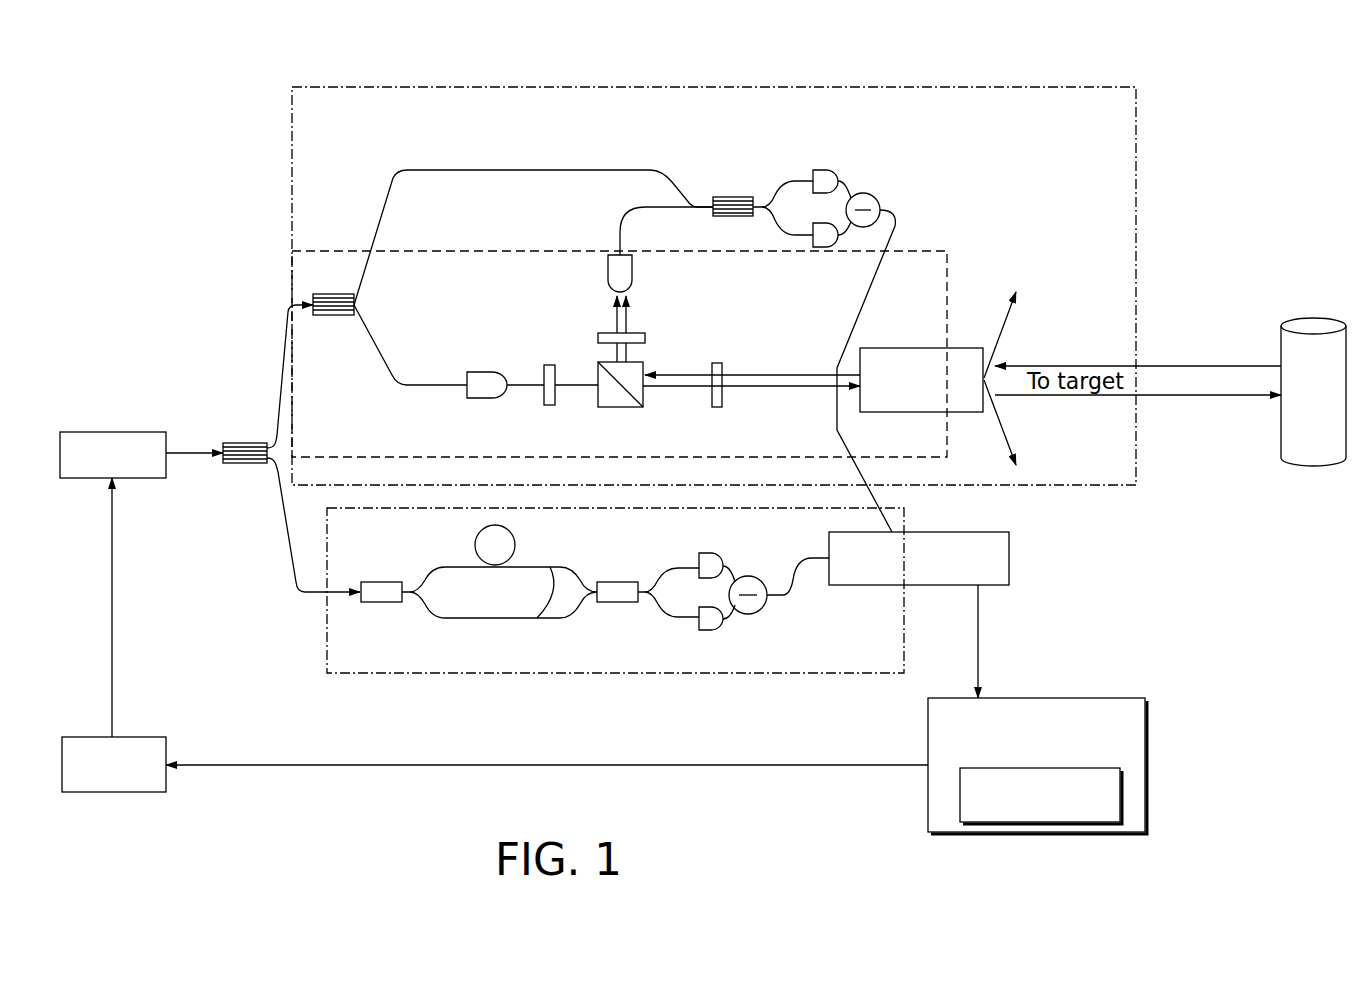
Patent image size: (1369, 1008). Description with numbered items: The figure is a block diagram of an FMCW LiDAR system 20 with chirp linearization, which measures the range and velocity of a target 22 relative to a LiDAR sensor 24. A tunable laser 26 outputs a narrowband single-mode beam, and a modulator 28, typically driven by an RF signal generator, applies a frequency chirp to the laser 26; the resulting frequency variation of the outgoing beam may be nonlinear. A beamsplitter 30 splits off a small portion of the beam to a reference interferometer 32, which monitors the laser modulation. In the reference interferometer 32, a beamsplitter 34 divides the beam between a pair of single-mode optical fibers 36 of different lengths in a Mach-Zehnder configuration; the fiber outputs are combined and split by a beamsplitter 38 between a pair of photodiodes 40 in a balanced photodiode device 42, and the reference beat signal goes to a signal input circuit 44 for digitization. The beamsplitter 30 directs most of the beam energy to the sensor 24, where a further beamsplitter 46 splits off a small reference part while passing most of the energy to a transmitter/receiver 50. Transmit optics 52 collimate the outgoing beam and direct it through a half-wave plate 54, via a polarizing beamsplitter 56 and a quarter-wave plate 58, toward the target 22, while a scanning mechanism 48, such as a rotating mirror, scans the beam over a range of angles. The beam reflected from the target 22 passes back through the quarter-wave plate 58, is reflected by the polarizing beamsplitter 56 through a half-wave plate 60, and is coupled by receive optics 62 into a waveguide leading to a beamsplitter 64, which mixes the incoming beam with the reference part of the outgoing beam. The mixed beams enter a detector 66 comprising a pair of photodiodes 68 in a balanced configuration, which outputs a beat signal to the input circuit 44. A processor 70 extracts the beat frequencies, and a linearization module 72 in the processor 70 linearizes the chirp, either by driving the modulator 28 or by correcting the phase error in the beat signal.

The FMCW LiDAR system 20 is at (202, 217).
The target 22 is at (1281, 344).
The LiDAR sensor 24 is at (918, 87).
The tunable laser 26 is at (123, 433).
The modulator 28 is at (113, 792).
The beamsplitter 30 is at (247, 443).
The reference interferometer 32 is at (845, 673).
The beamsplitter 34 is at (402, 582).
The single-mode optical fibers 36 is at (550, 567).
The beamsplitter 38 is at (631, 602).
The photodiodes 40 is at (704, 578).
The balanced photodiode device 42 is at (757, 687).
The signal input circuit 44 is at (980, 532).
The beamsplitter 46 is at (333, 315).
The scanning mechanism 48 is at (913, 412).
The transmitter/receiver 50 is at (488, 251).
The transmit optics 52 is at (476, 398).
The half-wave plate 54 is at (549, 405).
The polarizing beamsplitter 56 is at (616, 407).
The quarter-wave plate 58 is at (717, 407).
The half-wave plate 60 is at (598, 336).
The receive optics 62 is at (608, 268).
The beamsplitter 64 is at (736, 216).
The detector 66 is at (882, 168).
The photodiodes 68 is at (819, 193).
The processor 70 is at (1107, 698).
The linearization module 72 is at (1103, 768).